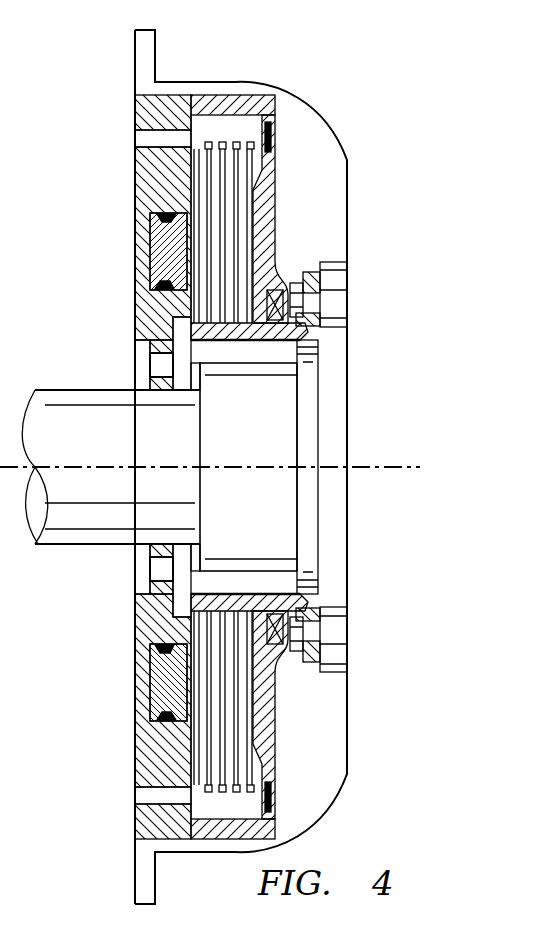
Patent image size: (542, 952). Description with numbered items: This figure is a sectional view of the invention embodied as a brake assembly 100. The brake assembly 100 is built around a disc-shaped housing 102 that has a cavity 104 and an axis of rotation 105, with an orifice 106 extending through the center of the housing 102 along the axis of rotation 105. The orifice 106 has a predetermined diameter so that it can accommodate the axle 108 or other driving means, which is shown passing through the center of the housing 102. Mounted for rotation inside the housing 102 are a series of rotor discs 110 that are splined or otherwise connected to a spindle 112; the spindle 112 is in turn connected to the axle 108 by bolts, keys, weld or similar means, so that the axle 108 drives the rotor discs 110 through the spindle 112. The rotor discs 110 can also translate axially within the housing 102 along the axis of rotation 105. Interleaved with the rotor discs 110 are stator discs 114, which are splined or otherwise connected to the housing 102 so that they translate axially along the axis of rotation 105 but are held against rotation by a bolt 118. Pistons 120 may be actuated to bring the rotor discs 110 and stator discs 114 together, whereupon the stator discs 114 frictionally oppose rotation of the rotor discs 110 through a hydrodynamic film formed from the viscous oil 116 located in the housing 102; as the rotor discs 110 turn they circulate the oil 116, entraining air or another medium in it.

The brake assembly 100 is at (361, 110).
The housing 102 is at (303, 108).
The cavity 104 is at (243, 118).
The axis of rotation 105 is at (382, 467).
The orifice 106 is at (153, 387).
The axle 108 is at (122, 452).
The rotor discs 110 is at (245, 225).
The spindle 112 is at (265, 345).
The stator discs 114 is at (222, 148).
The oil 116 is at (223, 805).
The bolt 118 is at (273, 140).
The pistons 120 is at (157, 246).